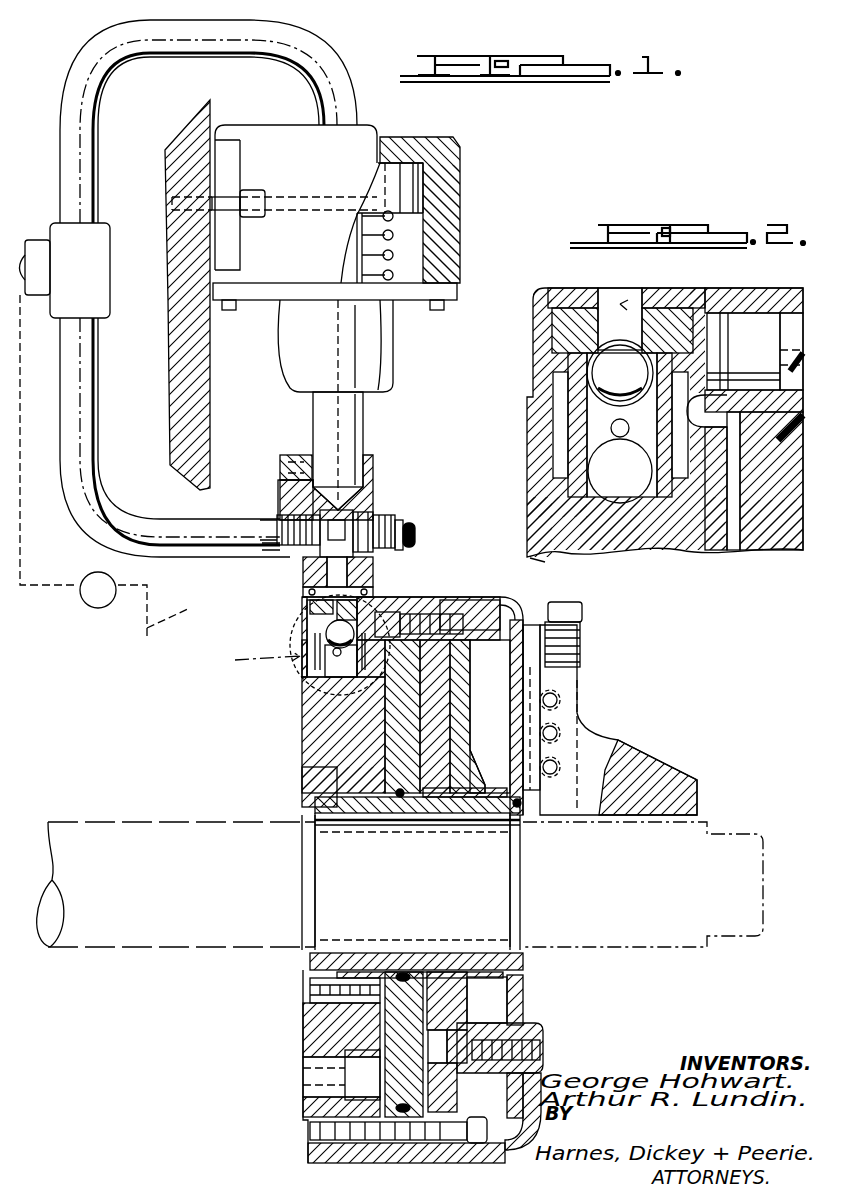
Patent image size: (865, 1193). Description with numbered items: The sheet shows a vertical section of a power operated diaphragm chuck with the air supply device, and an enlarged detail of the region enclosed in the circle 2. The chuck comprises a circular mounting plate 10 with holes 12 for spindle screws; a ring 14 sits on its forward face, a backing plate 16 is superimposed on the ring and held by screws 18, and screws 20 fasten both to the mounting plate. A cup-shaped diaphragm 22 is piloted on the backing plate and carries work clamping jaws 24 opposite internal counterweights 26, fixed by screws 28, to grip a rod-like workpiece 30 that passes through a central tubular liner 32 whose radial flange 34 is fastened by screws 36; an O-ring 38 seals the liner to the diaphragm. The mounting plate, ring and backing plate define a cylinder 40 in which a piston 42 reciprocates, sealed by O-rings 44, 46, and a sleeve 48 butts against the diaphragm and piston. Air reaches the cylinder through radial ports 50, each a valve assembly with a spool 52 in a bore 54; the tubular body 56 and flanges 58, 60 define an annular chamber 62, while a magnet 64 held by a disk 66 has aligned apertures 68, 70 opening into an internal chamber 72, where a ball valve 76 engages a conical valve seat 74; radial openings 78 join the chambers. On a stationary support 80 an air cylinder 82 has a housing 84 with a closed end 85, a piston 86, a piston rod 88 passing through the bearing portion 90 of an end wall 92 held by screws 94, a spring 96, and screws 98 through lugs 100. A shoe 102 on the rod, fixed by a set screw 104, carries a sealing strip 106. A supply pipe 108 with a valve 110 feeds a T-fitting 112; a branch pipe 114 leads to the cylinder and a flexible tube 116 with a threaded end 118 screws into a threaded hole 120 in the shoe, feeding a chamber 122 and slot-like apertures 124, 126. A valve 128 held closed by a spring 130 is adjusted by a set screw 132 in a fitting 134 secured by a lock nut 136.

In FIG. 1, the circle 2 is at (298, 645).
In FIG. 1, the mounting plate 10 is at (305, 724).
In FIG. 2, the mounting plate 10 is at (529, 526).
In FIG. 1, the holes 12 is at (305, 1079).
In FIG. 1, the ring 14 is at (433, 598).
In FIG. 2, the ring 14 is at (766, 291).
In FIG. 1, the backing plate 16 is at (441, 1022).
In FIG. 1, the screws 18 is at (475, 615).
In FIG. 2, the screws 18 is at (752, 316).
In FIG. 1, the screws 20 is at (418, 1147).
In FIG. 1, the diaphragm 22 is at (531, 604).
In FIG. 2, the diaphragm 22 is at (532, 568).
In FIG. 1, the work clamping jaws 24 is at (592, 738).
In FIG. 1, the counterweights 26 is at (490, 712).
In FIG. 1, the screws 28 is at (560, 622).
In FIG. 1, the workpiece 30 is at (125, 826).
In FIG. 2, the workpiece 30 is at (755, 364).
In FIG. 1, the tubular liner 32 is at (345, 780).
In FIG. 1, the radial flange 34 is at (303, 779).
In FIG. 1, the screws 36 is at (306, 1014).
In FIG. 1, the O-ring 38 is at (500, 830).
In FIG. 1, the cylinder 40 is at (452, 1098).
In FIG. 2, the cylinder 40 is at (732, 531).
In FIG. 1, the piston 42 is at (413, 731).
In FIG. 2, the piston 42 is at (760, 542).
In FIG. 1, the O-ring 44 is at (448, 662).
In FIG. 2, the O-ring 44 is at (790, 452).
In FIG. 1, the O-ring 46 is at (387, 812).
In FIG. 1, the sleeve 48 is at (507, 795).
In FIG. 1, the ports 50 is at (372, 599).
In FIG. 2, the ports 50 is at (620, 304).
In FIG. 1, the spool 52 is at (323, 661).
In FIG. 2, the spool 52 is at (547, 400).
In FIG. 2, the bore 54 is at (553, 471).
In FIG. 2, the tubular body 56 is at (562, 447).
In FIG. 2, the radial flange 58 is at (555, 366).
In FIG. 2, the radial flange 60 is at (553, 496).
In FIG. 2, the annular chamber 62 is at (553, 428).
In FIG. 1, the magnet 64 is at (320, 638).
In FIG. 2, the magnet 64 is at (556, 329).
In FIG. 1, the disk 66 is at (312, 613).
In FIG. 2, the disk 66 is at (590, 296).
In FIG. 2, the aperture 68 is at (625, 318).
In FIG. 2, the aperture 70 is at (612, 300).
In FIG. 2, the internal chamber 72 is at (606, 490).
In FIG. 2, the valve seat 74 is at (636, 353).
In FIG. 1, the valve 76 is at (333, 654).
In FIG. 2, the valve 76 is at (614, 426).
In FIG. 2, the radial openings 78 is at (621, 441).
In FIG. 1, the stationary support 80 is at (206, 406).
In FIG. 1, the air cylinder 82 is at (470, 196).
In FIG. 1, the housing 84 is at (450, 230).
In FIG. 1, the closed end 85 is at (380, 137).
In FIG. 1, the piston 86 is at (408, 192).
In FIG. 1, the piston rod 88 is at (348, 423).
In FIG. 1, the bearing portion 90 is at (385, 366).
In FIG. 1, the end wall 92 is at (336, 301).
In FIG. 1, the screws 94 is at (231, 311).
In FIG. 1, the spring 96 is at (367, 271).
In FIG. 1, the screws 98 is at (267, 204).
In FIG. 1, the lugs 100 is at (232, 148).
In FIG. 1, the shoe 102 is at (384, 478).
In FIG. 1, the set screw 104 is at (280, 470).
In FIG. 1, the sealing strip 106 is at (377, 581).
In FIG. 1, the supply pipe 108 is at (118, 467).
In FIG. 1, the valve 110 is at (86, 574).
In FIG. 1, the T-fitting 112 is at (100, 238).
In FIG. 1, the branch pipe 114 is at (92, 163).
In FIG. 1, the flexible tube 116 is at (94, 368).
In FIG. 1, the threaded end 118 is at (280, 506).
In FIG. 1, the threaded hole 120 is at (279, 557).
In FIG. 1, the chamber 122 is at (360, 513).
In FIG. 1, the aperture 124 is at (305, 578).
In FIG. 1, the aperture 126 is at (305, 596).
In FIG. 1, the valve 128 is at (290, 531).
In FIG. 1, the spring 130 is at (395, 516).
In FIG. 1, the set screw 132 is at (417, 534).
In FIG. 1, the fitting 134 is at (413, 539).
In FIG. 1, the lock nut 136 is at (418, 524).